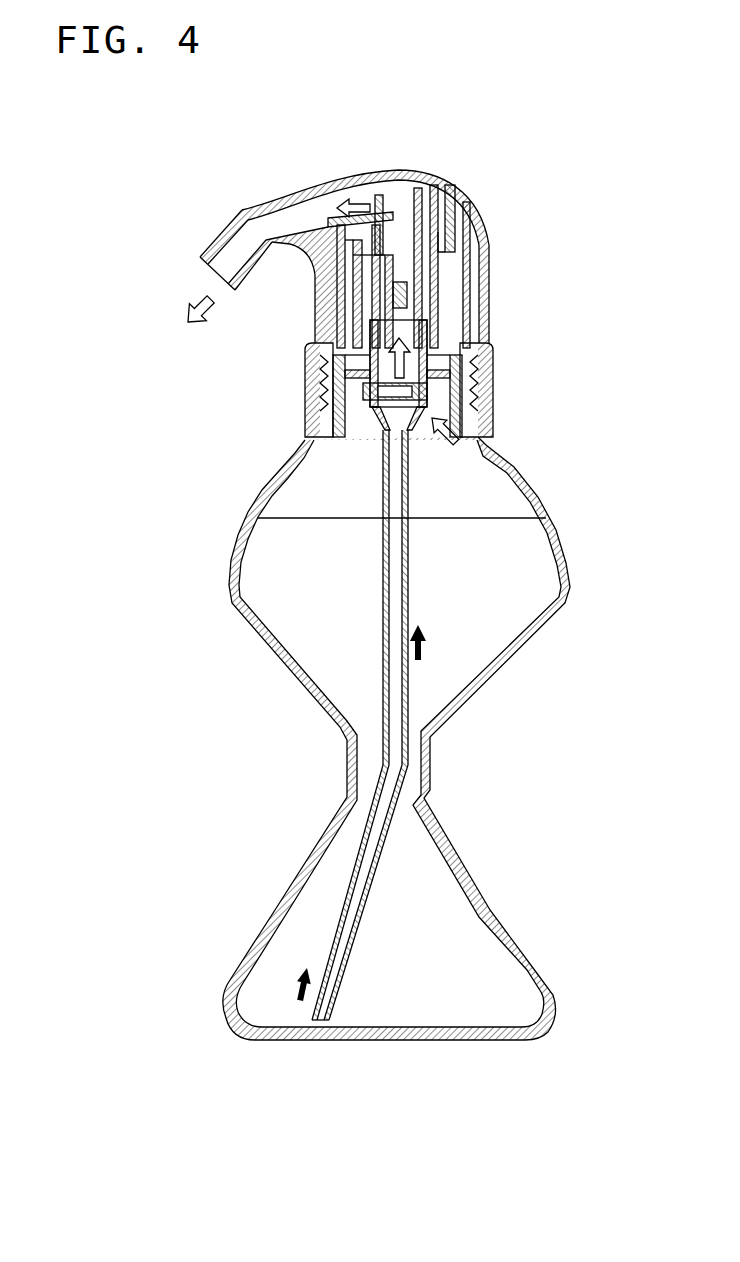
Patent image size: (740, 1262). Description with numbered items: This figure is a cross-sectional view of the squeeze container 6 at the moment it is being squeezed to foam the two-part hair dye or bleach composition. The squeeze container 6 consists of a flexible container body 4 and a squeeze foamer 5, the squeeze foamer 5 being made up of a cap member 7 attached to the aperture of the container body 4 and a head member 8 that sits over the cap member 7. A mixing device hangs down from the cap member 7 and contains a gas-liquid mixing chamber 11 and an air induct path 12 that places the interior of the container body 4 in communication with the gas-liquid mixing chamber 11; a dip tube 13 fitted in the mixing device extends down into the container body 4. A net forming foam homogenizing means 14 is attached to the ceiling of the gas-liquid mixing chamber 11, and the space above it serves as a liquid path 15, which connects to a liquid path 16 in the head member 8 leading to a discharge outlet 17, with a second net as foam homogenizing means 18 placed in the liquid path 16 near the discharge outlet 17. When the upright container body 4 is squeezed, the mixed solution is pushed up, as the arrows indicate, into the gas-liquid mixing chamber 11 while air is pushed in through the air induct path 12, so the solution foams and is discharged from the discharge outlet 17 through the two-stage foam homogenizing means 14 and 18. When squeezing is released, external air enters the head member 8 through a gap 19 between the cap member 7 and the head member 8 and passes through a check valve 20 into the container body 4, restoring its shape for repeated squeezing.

The container body 4 is at (560, 535).
The squeeze foamer 5 is at (374, 281).
The squeeze container 6 is at (428, 1153).
The cap member 7 is at (493, 372).
The head member 8 is at (341, 229).
The gas-liquid mixing chamber 11 is at (365, 395).
The air induct path 12 is at (445, 411).
The dip tube 13 is at (383, 588).
The foam homogenizing means 14 is at (347, 375).
The liquid path 15 is at (322, 322).
The liquid path 16 is at (397, 205).
The discharge outlet 17 is at (202, 272).
The foam homogenizing means 18 is at (257, 203).
The gap 19 is at (485, 333).
The check valve 20 is at (488, 308).